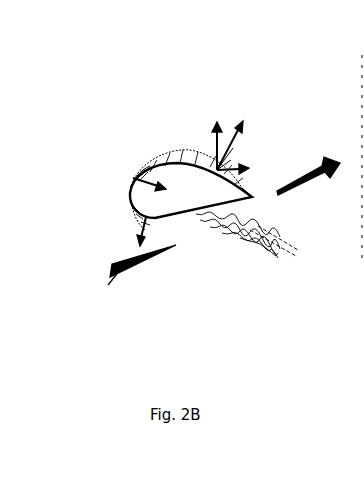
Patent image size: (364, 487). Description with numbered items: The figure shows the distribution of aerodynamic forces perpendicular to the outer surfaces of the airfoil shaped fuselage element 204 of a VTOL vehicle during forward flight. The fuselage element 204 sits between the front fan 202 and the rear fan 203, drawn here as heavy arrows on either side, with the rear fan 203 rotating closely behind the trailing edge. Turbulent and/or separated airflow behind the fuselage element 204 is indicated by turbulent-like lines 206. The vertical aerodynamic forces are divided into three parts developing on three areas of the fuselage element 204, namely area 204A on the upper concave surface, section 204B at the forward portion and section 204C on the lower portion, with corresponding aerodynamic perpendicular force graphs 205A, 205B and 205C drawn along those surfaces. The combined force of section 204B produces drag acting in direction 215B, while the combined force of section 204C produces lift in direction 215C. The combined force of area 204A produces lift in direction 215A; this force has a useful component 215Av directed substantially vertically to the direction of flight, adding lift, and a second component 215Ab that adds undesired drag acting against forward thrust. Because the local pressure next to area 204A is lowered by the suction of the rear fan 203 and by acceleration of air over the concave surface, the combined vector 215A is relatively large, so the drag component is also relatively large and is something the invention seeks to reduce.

The front fan 202 is at (133, 280).
The rear fan 203 is at (307, 182).
The airfoil shaped fuselage element 204 is at (203, 266).
The area 204A of airfoil shaped fuselage element 204A is at (180, 157).
The section 204B of airfoil shaped fuselage element 204B is at (143, 172).
The section 204C of airfoil shaped fuselage element 204C is at (132, 220).
The aerodynamic perpendicular force graph 205A is at (260, 183).
The aerodynamic perpendicular force graph 205B is at (132, 183).
The aerodynamic perpendicular force graph 205C is at (138, 240).
The turbulent-like lines 206 is at (285, 267).
The combined aerodynamic force 215A is at (242, 114).
The vertical component of combined aerodynamic force 215Av is at (219, 113).
The horizontal force component 215Ab is at (249, 176).
The drag force direction 215B is at (133, 170).
The lift force direction 215C is at (138, 247).